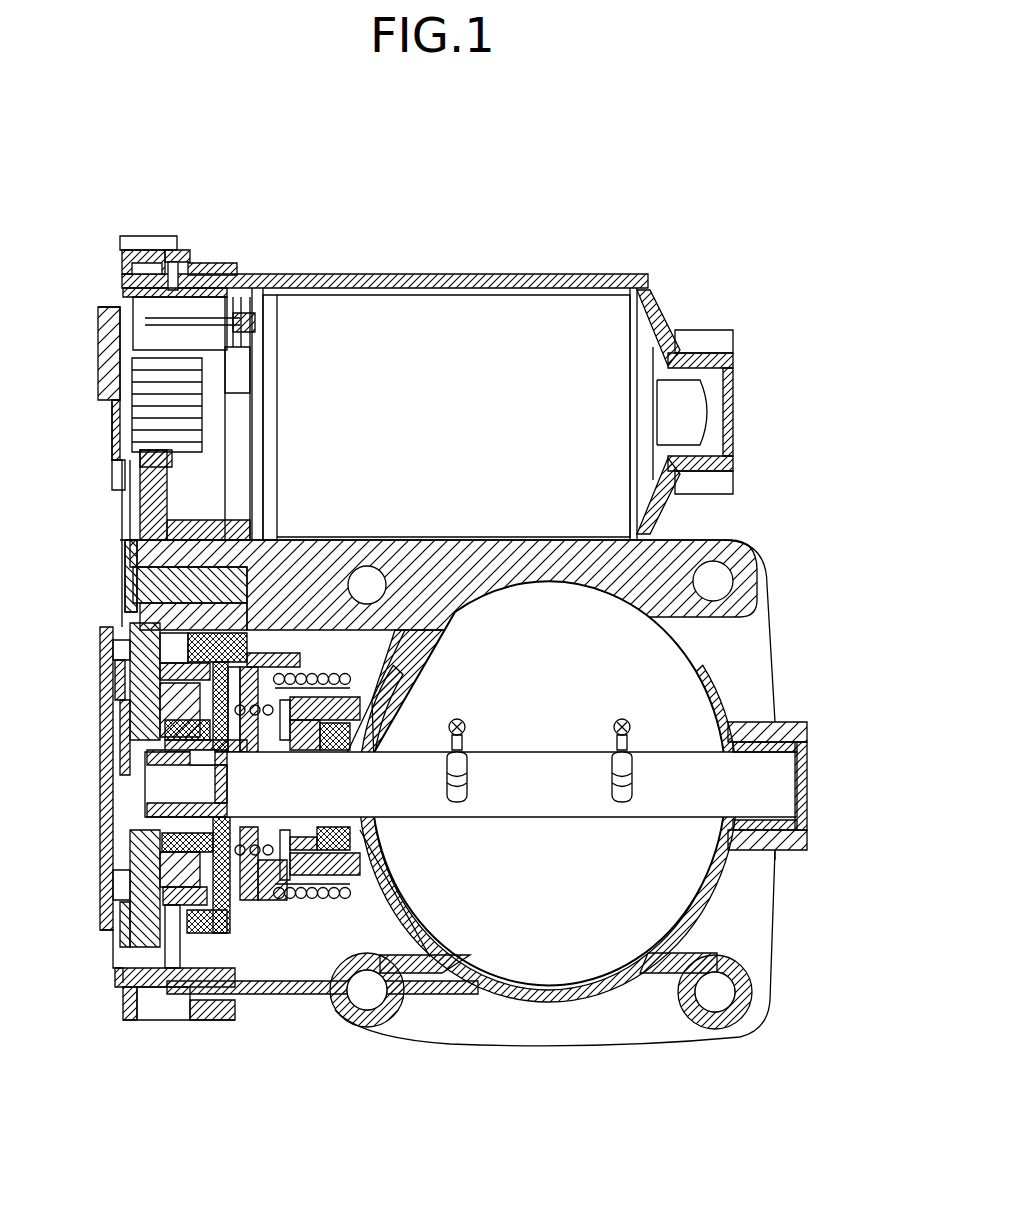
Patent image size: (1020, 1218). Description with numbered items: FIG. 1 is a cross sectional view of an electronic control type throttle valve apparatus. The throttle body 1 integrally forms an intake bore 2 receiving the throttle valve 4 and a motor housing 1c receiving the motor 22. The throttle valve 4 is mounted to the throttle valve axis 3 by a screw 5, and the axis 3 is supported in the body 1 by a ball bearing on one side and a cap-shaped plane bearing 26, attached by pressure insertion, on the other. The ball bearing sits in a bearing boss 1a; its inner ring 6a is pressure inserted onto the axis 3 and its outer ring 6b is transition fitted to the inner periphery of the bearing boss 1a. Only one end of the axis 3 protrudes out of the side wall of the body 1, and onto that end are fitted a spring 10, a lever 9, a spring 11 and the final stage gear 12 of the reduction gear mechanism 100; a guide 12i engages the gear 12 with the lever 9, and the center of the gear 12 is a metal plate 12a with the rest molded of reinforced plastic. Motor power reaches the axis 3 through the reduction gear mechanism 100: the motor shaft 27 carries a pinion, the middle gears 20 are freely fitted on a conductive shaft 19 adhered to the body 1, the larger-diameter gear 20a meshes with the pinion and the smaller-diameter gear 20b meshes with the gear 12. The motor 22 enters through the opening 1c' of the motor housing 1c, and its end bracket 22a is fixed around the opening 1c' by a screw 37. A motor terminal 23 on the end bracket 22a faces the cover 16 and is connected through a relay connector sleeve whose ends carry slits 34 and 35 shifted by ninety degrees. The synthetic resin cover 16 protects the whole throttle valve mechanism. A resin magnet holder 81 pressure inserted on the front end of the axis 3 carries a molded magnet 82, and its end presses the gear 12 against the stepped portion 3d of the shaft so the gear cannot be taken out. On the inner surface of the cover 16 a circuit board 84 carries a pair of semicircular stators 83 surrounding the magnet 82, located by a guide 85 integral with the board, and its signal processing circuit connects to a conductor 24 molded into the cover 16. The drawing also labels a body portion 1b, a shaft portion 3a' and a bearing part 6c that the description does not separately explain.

The throttle body 1 is at (468, 793).
The bearing boss 1a is at (353, 885).
The body side wall 1b is at (778, 852).
The motor housing 1c is at (427, 371).
The opening for mounting the motor 1c' is at (220, 370).
The intake bore 2 is at (600, 602).
The throttle valve axis 3 is at (471, 758).
The shaft end portion 3a' is at (187, 783).
The stepped portion 3d is at (230, 797).
The throttle valve 4 is at (448, 695).
The screw 5 is at (462, 718).
The inner ring 6a is at (362, 745).
The outer ring 6b is at (370, 868).
The bearing 6c is at (370, 838).
The lever 9 is at (263, 907).
The spring 10 is at (307, 907).
The spring 11 is at (243, 872).
The final stage gear 12 is at (210, 935).
The metal plate 12a is at (230, 757).
The guide 12i is at (357, 795).
The cover 16 is at (103, 810).
The conductive shaft 19 is at (357, 545).
The middle gears 20 is at (165, 516).
The larger-diameter gear 20a is at (118, 471).
The smaller-diameter gear 20b is at (217, 527).
The motor 22 is at (440, 360).
The end bracket 22a is at (272, 411).
The motor terminal 23 is at (178, 260).
The conductor 24 is at (110, 700).
The plane bearing 26 is at (807, 725).
The motor shaft 27 is at (207, 427).
The slit 34 is at (105, 335).
The slit 35 is at (222, 337).
The screw 37 is at (122, 298).
The magnet holder 81 is at (125, 752).
The magnet 82 is at (214, 784).
The stator 83 is at (108, 880).
The circuit board 84 is at (118, 656).
The guide 85 is at (173, 907).
The reduction gear mechanism 100 is at (128, 533).